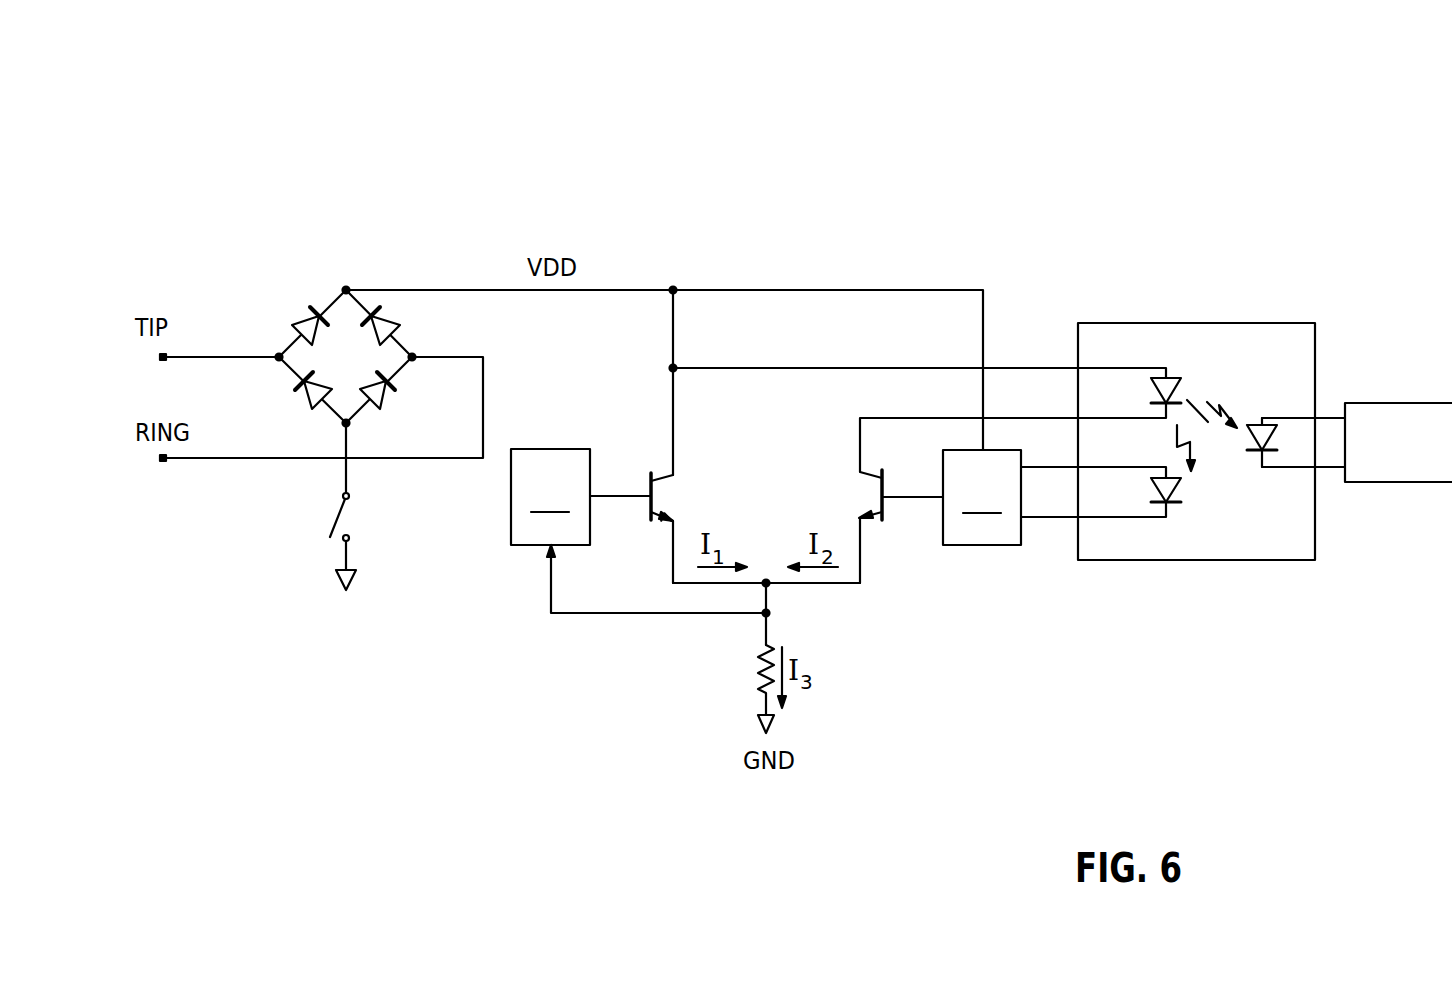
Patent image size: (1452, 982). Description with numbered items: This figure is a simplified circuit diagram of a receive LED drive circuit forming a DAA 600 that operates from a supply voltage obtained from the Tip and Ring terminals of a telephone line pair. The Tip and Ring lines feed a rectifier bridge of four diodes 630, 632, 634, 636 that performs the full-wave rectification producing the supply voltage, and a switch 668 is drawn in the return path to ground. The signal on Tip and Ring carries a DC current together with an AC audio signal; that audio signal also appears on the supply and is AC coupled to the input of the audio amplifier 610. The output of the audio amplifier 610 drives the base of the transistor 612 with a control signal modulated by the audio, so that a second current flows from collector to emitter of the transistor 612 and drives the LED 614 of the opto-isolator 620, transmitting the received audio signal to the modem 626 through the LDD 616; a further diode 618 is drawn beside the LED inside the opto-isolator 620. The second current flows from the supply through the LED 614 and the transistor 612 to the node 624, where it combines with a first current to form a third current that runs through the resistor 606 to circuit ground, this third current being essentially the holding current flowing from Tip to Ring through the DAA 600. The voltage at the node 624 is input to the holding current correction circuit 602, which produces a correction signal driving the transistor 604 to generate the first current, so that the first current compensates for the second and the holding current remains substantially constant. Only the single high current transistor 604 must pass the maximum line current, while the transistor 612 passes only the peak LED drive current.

The DAA 600 is at (290, 127).
The diode 630 is at (300, 320).
The diode 632 is at (397, 325).
The diode 634 is at (387, 408).
The diode 636 is at (307, 400).
The hook switch 668 is at (347, 533).
The holding current correction circuit 602 is at (638, 531).
The transistor 604 is at (652, 475).
The transistor 612 is at (902, 457).
The audio amplifier 610 is at (1054, 497).
The node 624 is at (770, 590).
The resistor 606 is at (757, 673).
The LED 614 is at (1172, 370).
The LDD 616 is at (1255, 452).
The diode 618 is at (1178, 503).
The opto-isolator 620 is at (1288, 323).
The modem 626 is at (1395, 403).